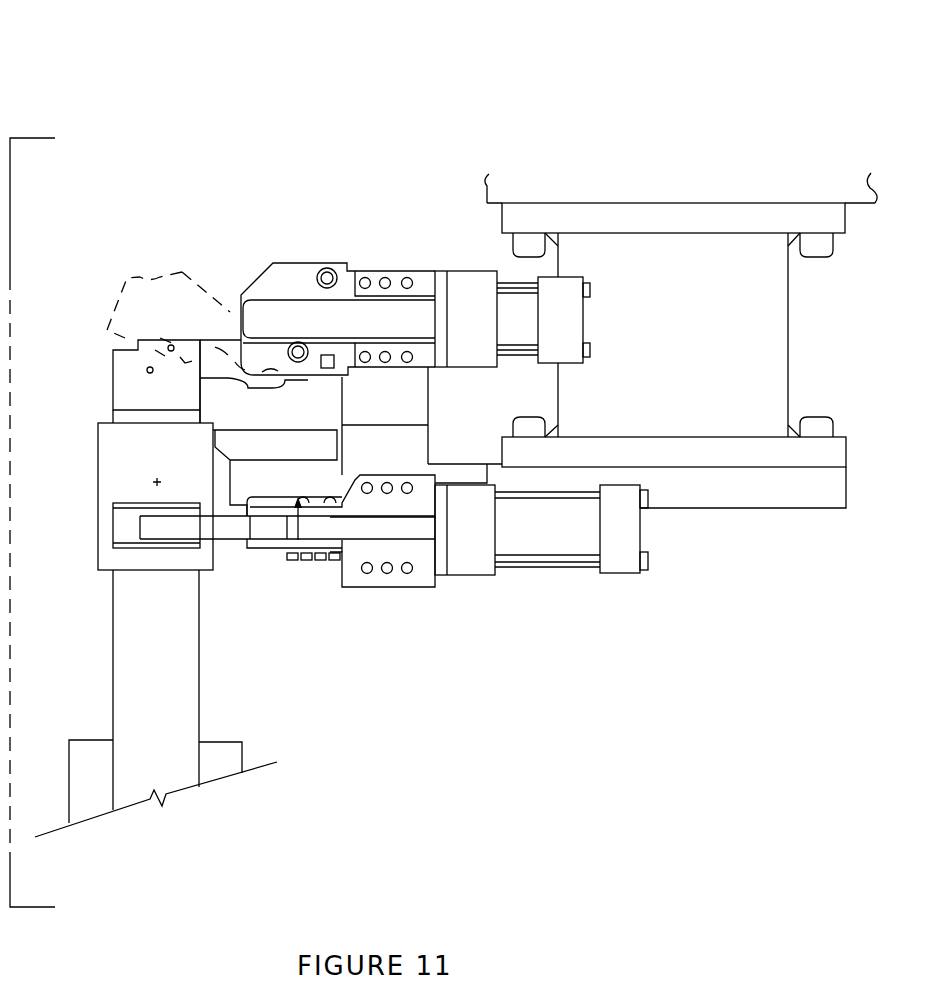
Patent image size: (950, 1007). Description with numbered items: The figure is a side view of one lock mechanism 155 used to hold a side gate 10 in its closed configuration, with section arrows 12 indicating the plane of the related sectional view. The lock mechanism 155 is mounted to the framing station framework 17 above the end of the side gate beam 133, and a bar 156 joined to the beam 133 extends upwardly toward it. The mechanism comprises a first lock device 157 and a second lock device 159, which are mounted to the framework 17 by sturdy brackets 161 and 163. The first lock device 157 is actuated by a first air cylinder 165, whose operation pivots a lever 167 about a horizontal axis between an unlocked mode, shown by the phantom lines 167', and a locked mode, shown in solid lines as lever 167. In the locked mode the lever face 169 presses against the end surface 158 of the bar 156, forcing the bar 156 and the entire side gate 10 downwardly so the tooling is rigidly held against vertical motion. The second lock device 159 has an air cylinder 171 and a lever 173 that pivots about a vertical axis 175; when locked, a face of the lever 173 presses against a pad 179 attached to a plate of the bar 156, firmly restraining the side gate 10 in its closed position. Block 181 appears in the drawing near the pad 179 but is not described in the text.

The section line 12 is at (77, 524).
The first lock device 157 is at (298, 250).
The lock mechanism 155 is at (399, 155).
The framework 17 is at (525, 218).
The bracket 161 is at (673, 265).
The first air cylinder 165 is at (563, 318).
The bracket 163 is at (430, 425).
The second lock device 159 is at (474, 586).
The air cylinder 171 is at (620, 532).
The end surface 158 is at (145, 410).
The lever 167 is at (108, 351).
The lever in unlocked mode 167' is at (170, 262).
The lever face 169 is at (145, 412).
The guide block 181 is at (128, 482).
The pad 179 is at (123, 527).
The lever 173 is at (226, 527).
The vertical axis 175 is at (298, 563).
The bar 156 is at (165, 630).
The side gate 10 is at (210, 709).
The side gate beam 133 is at (222, 760).